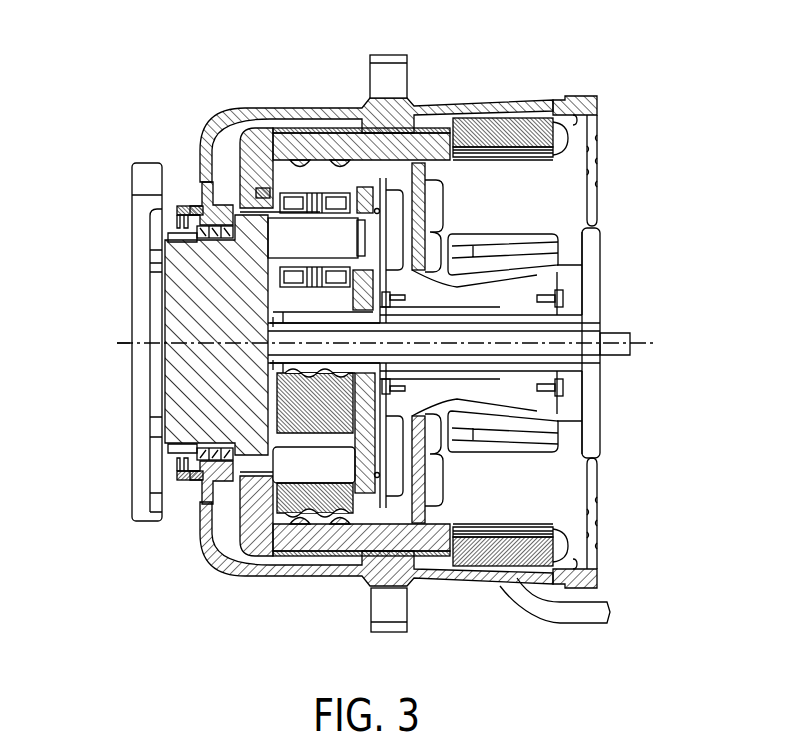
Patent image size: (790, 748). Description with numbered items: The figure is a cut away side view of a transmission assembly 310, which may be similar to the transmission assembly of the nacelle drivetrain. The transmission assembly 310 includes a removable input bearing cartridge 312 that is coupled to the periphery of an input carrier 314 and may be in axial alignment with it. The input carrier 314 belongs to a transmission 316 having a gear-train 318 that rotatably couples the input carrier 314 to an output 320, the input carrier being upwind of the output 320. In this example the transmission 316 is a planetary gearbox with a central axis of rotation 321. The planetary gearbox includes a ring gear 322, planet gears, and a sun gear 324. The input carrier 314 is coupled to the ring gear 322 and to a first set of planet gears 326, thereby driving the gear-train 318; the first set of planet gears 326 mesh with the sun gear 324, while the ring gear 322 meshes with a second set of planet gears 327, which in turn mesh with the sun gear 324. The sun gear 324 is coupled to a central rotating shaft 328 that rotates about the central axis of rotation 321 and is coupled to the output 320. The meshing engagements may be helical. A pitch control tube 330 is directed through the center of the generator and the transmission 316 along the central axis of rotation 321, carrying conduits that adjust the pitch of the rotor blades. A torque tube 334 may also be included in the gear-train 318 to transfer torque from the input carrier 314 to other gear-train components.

The transmission assembly 310 is at (118, 72).
The removable input bearing cartridge 312 is at (184, 190).
The input carrier 314 is at (141, 218).
The transmission 316 is at (420, 84).
The gear-train 318 is at (318, 95).
The output 320 is at (622, 333).
The central axis of rotation 321 is at (125, 342).
The ring gear 322 is at (472, 140).
The sun gear 324 is at (290, 378).
The first set of planet gears 326 is at (263, 131).
The second set of planet gears 327 is at (540, 251).
The central rotating shaft 328 is at (586, 366).
The pitch control tube 330 is at (588, 330).
The torque tube 334 is at (384, 582).